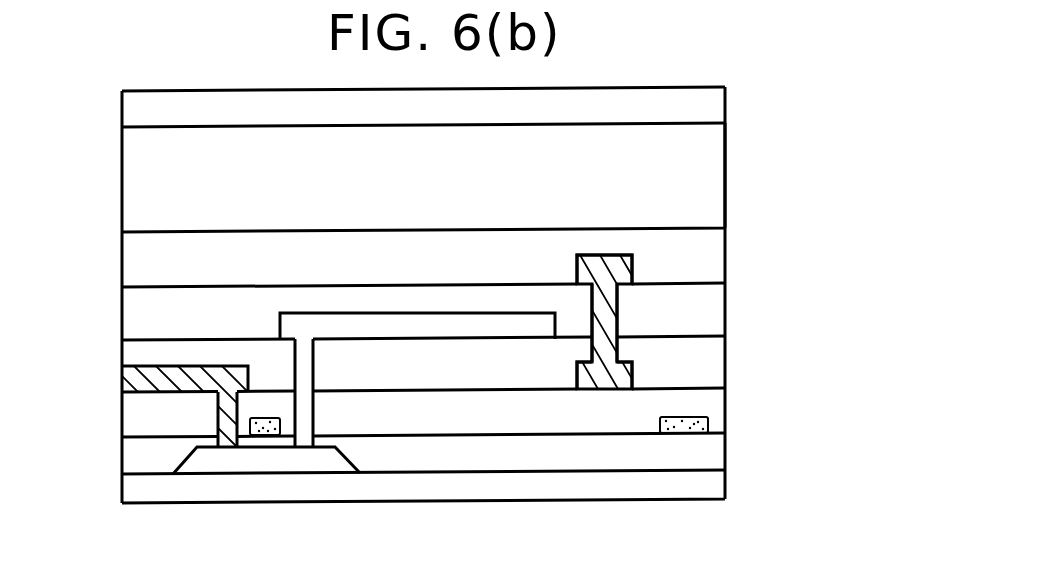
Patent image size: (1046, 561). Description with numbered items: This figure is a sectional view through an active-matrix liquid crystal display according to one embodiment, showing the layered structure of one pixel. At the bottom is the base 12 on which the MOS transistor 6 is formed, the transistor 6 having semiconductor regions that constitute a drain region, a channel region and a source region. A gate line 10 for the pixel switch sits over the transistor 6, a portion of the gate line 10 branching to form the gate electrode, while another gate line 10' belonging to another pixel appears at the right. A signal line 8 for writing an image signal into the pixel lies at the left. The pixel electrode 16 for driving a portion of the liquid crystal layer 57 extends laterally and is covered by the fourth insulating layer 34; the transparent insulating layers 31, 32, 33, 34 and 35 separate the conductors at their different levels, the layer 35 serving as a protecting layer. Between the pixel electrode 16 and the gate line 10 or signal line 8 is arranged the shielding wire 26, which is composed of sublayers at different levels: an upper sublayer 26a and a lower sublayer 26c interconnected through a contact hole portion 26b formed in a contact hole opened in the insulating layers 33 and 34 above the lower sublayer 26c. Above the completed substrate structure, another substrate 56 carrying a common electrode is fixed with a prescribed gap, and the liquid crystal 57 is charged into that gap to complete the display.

The MOS transistor 6 is at (322, 462).
The signal line 8 is at (170, 382).
The gate line 10 is at (261, 485).
The another gate line 10' is at (728, 415).
The substrate 12 is at (679, 485).
The pixel electrode 16 is at (400, 330).
The shielding wire 26 is at (810, 243).
The upper sublayer 26a is at (632, 265).
The contact hole portion 26b is at (617, 318).
The lower sublayer 26c is at (632, 377).
The transparent insulating layer 31 is at (133, 457).
The transparent insulating layer 32 is at (128, 412).
The transparent insulating layer 33 is at (130, 354).
The fourth insulating layer 34 is at (127, 318).
The protecting layer 35 is at (127, 263).
The substrate 56 is at (710, 105).
The liquid crystal layer 57 is at (707, 162).